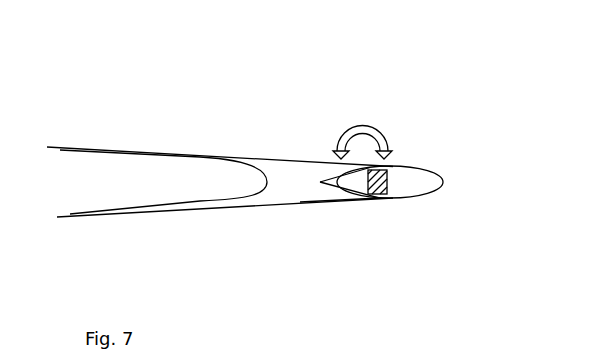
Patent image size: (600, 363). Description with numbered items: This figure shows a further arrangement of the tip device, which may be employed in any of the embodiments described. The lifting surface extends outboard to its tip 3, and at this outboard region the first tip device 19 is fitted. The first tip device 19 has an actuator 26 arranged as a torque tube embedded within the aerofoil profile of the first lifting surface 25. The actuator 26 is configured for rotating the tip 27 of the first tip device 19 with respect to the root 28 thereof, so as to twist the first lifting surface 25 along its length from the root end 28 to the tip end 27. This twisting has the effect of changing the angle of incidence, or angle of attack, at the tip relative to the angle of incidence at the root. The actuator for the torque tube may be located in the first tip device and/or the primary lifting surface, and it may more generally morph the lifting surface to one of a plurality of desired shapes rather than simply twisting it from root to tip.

The tip 3 is at (101, 124).
The root 28 is at (171, 142).
The first tip device 19 is at (419, 157).
The tip 27 is at (453, 166).
The first lifting surface 25 is at (415, 207).
The actuator 26 is at (364, 220).